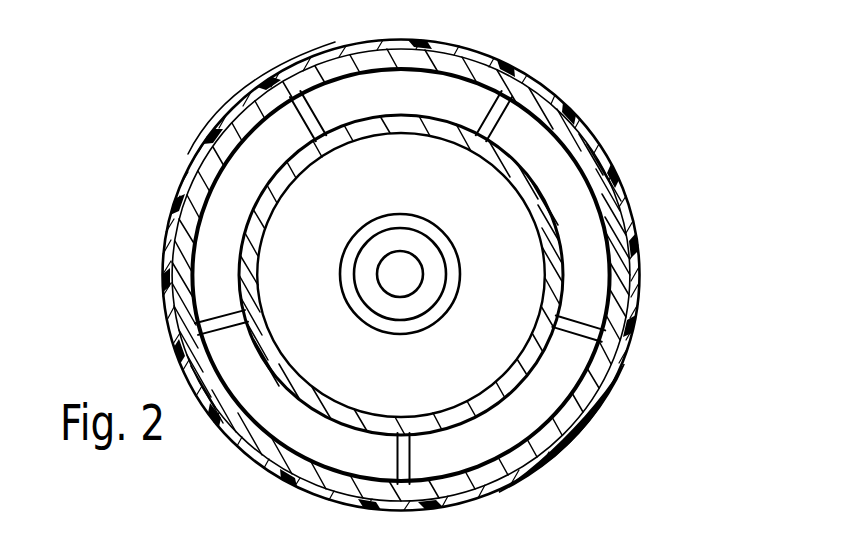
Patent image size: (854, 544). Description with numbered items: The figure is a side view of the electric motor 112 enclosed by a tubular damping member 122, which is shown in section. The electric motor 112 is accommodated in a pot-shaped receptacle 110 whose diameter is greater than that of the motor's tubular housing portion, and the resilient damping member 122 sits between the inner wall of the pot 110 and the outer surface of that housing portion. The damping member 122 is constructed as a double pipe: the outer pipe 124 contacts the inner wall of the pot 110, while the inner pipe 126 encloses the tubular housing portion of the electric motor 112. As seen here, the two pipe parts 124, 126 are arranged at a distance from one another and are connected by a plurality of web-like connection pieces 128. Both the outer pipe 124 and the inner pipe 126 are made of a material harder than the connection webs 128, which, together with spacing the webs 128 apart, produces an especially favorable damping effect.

The pot-shaped receptacle 110 is at (281, 466).
The electric motor 112 is at (497, 209).
The damping member 122 is at (557, 469).
The outer pipe 124 is at (603, 368).
The inner pipe 126 is at (546, 228).
The web-like connection pieces 128 is at (508, 127).